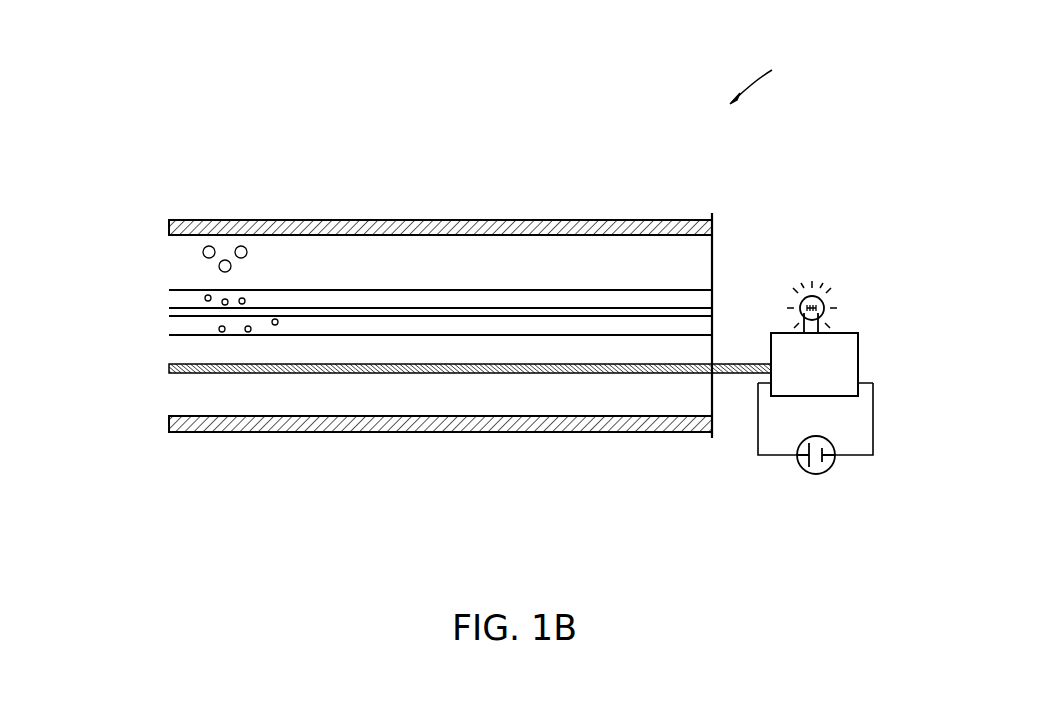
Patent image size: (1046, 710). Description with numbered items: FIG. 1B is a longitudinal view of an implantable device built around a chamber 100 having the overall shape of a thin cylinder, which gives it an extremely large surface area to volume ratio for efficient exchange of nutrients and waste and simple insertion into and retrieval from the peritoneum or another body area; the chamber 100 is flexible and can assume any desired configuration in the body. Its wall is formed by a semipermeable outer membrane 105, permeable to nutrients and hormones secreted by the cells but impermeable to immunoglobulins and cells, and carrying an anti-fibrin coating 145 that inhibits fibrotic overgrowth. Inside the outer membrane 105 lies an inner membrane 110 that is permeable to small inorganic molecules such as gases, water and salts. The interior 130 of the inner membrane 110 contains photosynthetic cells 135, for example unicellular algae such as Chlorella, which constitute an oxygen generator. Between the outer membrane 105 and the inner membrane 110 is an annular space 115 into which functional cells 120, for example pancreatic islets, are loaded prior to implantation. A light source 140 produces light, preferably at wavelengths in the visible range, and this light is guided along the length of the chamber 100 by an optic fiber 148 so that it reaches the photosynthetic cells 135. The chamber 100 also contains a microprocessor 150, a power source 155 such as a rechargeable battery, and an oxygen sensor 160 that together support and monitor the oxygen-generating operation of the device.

The chamber 100 is at (792, 60).
The outer membrane 105 is at (313, 237).
The inner membrane 110 is at (528, 290).
The annular space 115 is at (655, 260).
The functional cells 120 is at (160, 244).
The interior 130 is at (438, 300).
The photosynthetic cells 135 is at (204, 298).
The light source 140 is at (810, 285).
The anti-fibrin coating 145 is at (363, 220).
The optic fiber 148 is at (602, 290).
The microprocessor 150 is at (859, 362).
The power source 155 is at (813, 475).
The oxygen sensor 160 is at (592, 380).